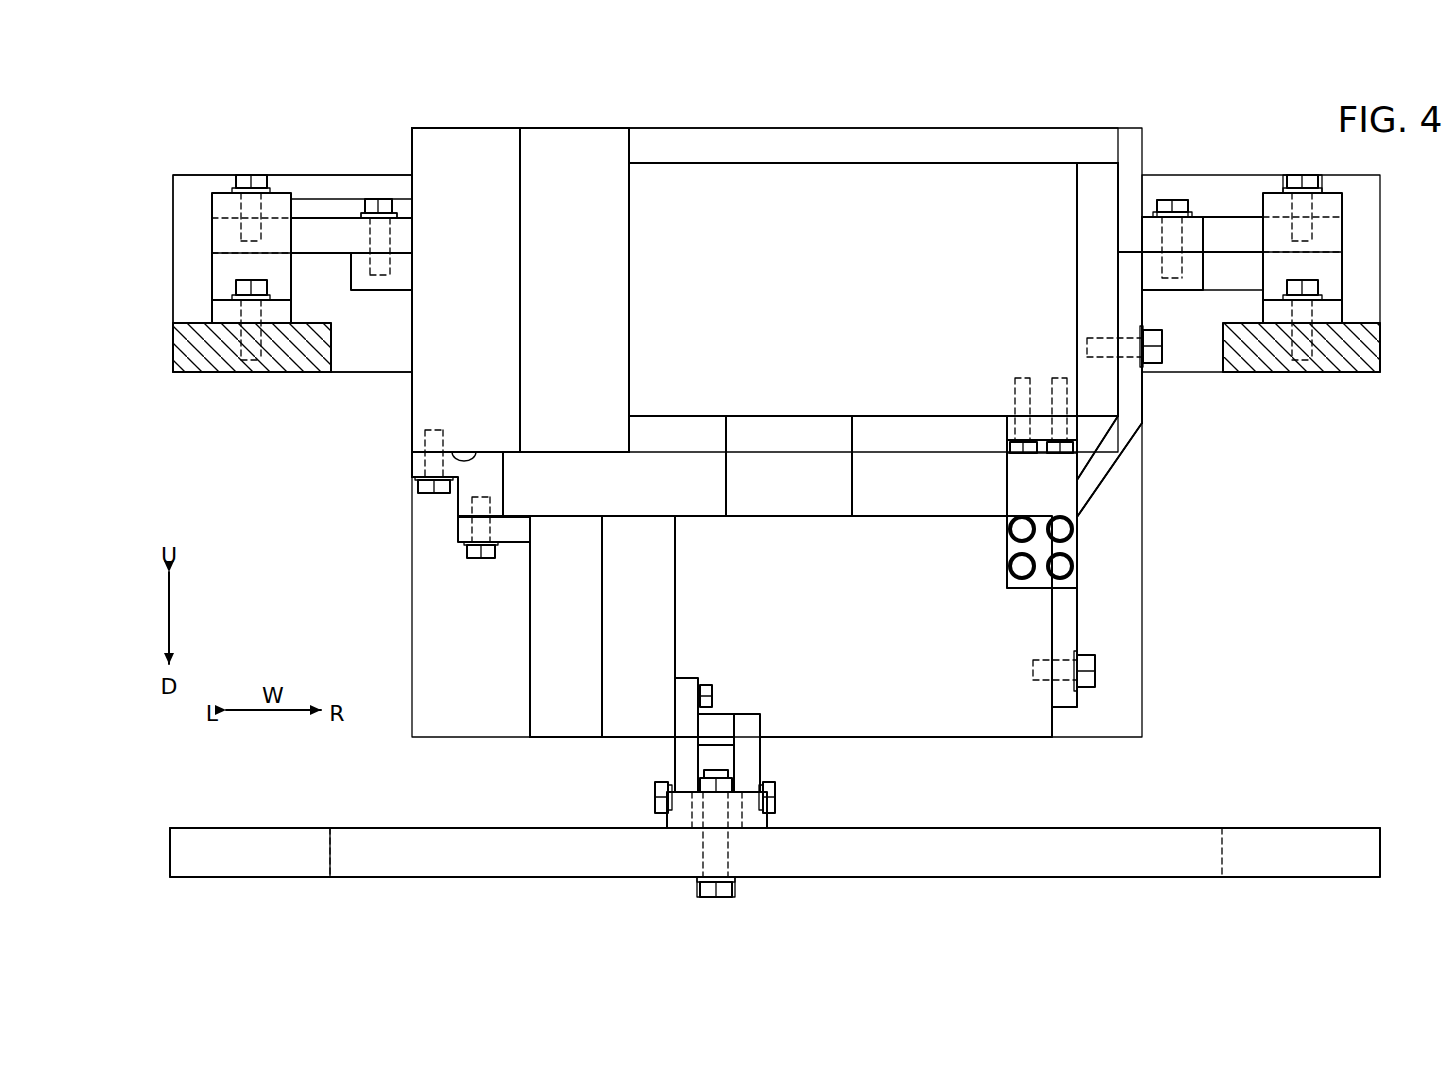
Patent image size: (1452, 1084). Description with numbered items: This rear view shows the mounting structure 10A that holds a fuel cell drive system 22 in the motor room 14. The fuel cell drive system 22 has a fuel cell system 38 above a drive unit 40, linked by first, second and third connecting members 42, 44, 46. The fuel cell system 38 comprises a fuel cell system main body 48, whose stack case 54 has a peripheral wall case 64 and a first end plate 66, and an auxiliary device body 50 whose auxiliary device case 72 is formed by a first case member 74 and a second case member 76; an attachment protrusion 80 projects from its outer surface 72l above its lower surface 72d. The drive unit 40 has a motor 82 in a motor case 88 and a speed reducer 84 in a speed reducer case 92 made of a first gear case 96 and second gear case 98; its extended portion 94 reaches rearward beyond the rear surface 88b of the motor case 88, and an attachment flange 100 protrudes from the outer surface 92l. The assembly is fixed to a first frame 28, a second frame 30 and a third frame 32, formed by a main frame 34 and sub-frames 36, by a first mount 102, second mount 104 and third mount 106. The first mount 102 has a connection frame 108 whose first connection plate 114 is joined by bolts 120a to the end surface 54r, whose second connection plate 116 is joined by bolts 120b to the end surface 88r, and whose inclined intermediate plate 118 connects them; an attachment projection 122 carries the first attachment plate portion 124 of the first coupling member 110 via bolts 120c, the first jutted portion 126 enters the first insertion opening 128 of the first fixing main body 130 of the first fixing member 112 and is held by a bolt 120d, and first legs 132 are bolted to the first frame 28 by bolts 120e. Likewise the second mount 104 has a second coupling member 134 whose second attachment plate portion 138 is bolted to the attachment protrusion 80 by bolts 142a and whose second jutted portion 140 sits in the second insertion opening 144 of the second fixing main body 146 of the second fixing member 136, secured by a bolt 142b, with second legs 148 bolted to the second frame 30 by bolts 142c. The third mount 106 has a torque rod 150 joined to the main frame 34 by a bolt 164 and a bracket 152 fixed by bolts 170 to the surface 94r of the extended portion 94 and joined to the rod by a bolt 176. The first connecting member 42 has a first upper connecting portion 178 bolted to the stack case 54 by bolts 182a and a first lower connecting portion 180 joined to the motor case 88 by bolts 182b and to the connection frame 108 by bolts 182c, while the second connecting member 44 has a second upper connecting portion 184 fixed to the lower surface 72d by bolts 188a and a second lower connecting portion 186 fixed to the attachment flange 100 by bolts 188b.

The mounting structure 10A is at (1027, 137).
The motor room 14 is at (1157, 582).
The fuel cell drive system 22 is at (838, 157).
The first frame 28 is at (1368, 378).
The second frame 30 is at (186, 376).
The third frame 32 is at (243, 815).
The main frame 34 is at (402, 850).
The sub-frames 36 is at (278, 848).
The fuel cell system 38 is at (680, 124).
The drive unit 40 is at (458, 588).
The first connecting member 42 is at (1002, 598).
The second connecting member 44 is at (490, 450).
The third connecting member 46 is at (726, 457).
The fuel cell system main body 48 is at (805, 158).
The auxiliary device body 50 is at (633, 143).
The stack case 54 is at (897, 161).
The end surface of stack case 54r is at (1120, 303).
The peripheral wall case 64 is at (939, 170).
The first end plate 66 is at (1090, 316).
The auxiliary device case 72 is at (752, 222).
The lower surface of auxiliary device case 72d is at (452, 458).
The outer surface of auxiliary device case 72l is at (412, 150).
The first case member 74 is at (612, 290).
The second case member 76 is at (500, 240).
The attachment protrusion 80 is at (386, 292).
The motor 82 is at (672, 601).
The speed reducer 84 is at (528, 605).
The motor case 88 is at (1014, 738).
The rear surface of motor case 88b is at (955, 738).
The end surface of motor case 88r is at (1055, 627).
The speed reducer case 92 is at (468, 668).
The outer surface of speed reducer case 92l is at (530, 664).
The extended portion 94 is at (563, 730).
The surface of extended portion 94r is at (677, 572).
The first gear case 96 is at (615, 712).
The second gear case 98 is at (538, 688).
The attachment flange 100 is at (462, 530).
The first mount 102 is at (1308, 432).
The second mount 104 is at (348, 372).
The third mount 106 is at (752, 888).
The connection frame 108 is at (1230, 448).
The first coupling member 110 is at (1258, 154).
The first fixing member 112 is at (1284, 163).
The first connection plate 114 is at (1148, 405).
The second connection plate 116 is at (1077, 600).
The intermediate plate 118 is at (1108, 473).
The bolts 120a is at (1164, 350).
The bolts 120b is at (1097, 664).
The bolts 120c is at (1155, 202).
The bolt 120d is at (1310, 175).
The bolt 120e is at (1262, 372).
The attachment projection 122 is at (1150, 270).
The first attachment plate portion 124 is at (1192, 238).
The first jutted portion 126 is at (1240, 232).
The first insertion opening 128 is at (1325, 250).
The first fixing main body 130 is at (1333, 263).
The first legs 132 is at (1330, 372).
The second coupling member 134 is at (383, 154).
The second fixing member 136 is at (206, 176).
The second attachment plate portion 138 is at (360, 237).
The second jutted portion 140 is at (313, 235).
The bolts 142a is at (410, 213).
The bolt 142b is at (250, 175).
The bolt 142c is at (290, 323).
The second insertion opening 144 is at (230, 250).
The second fixing main body 146 is at (285, 193).
The second legs 148 is at (225, 315).
The torque rod 150 is at (680, 822).
The bracket 152 is at (748, 716).
The bolt 164 is at (700, 888).
The bolts 170 is at (714, 693).
The bolt 176 is at (777, 793).
The first upper connecting portion 178 is at (1040, 437).
The first lower connecting portion 180 is at (1020, 487).
The bolts 182a is at (1058, 450).
The bolts 182b is at (1018, 566).
The bolts 182c is at (1065, 560).
The second upper connecting portion 184 is at (418, 462).
The second lower connecting portion 186 is at (497, 480).
The bolts 188a is at (424, 486).
The bolts 188b is at (470, 553).